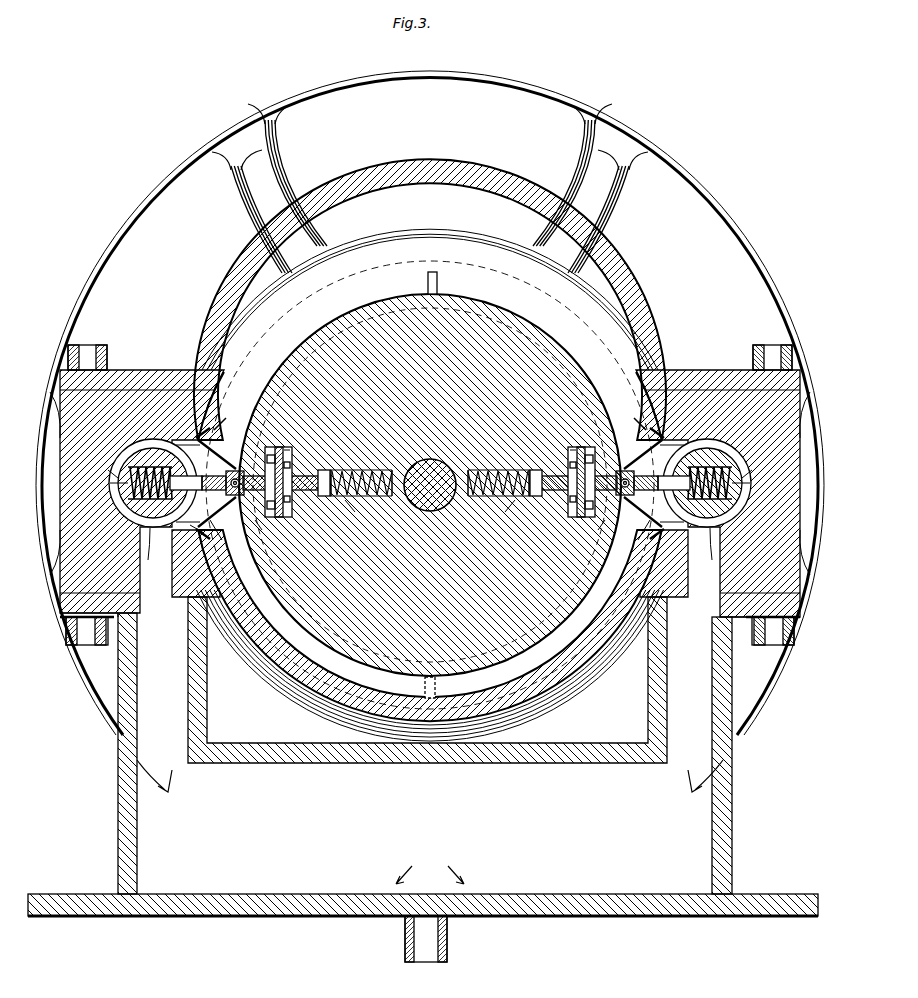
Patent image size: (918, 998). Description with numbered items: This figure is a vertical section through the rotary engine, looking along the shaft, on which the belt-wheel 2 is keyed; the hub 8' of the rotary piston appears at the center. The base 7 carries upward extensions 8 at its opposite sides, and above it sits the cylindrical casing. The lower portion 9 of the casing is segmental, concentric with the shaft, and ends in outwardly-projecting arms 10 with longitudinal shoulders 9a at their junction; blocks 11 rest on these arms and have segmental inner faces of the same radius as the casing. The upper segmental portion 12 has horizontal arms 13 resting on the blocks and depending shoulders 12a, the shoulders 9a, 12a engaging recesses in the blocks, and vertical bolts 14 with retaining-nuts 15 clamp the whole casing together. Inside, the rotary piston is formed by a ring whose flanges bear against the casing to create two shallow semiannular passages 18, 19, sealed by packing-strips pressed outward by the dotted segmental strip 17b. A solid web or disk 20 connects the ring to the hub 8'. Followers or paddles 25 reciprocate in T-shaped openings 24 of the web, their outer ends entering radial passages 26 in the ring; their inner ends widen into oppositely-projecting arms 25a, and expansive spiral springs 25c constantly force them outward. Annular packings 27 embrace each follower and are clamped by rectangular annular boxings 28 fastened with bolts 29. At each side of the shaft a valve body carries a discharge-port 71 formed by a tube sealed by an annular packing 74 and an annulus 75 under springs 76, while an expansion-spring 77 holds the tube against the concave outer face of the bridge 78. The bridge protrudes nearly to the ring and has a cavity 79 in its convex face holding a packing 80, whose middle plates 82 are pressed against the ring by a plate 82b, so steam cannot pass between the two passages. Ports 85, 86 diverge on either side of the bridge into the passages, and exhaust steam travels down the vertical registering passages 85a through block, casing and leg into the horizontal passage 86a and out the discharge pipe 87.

The belt-wheel 2 is at (437, 79).
The base 7 is at (423, 877).
The upward extensions 8 is at (421, 753).
The hub 8' is at (458, 360).
The lower portion of the engine-casing 9 is at (328, 692).
The longitudinal shoulders 9a is at (222, 600).
The outwardly-projecting arms 10 is at (72, 588).
The blocks 11 is at (75, 548).
The segmental portion of the upper casing 12 is at (430, 248).
The depending shoulders 12a is at (232, 398).
The outwardly-projecting horizontal arms 13 is at (166, 370).
The vertical bolts 14 is at (88, 345).
The retaining-nuts 15 is at (80, 632).
The segmental strip 17b is at (603, 320).
The semiannular passage 18 is at (413, 283).
The semiannular passage 19 is at (417, 687).
The web or spoke 20 is at (430, 485).
The T-shaped openings 24 is at (334, 470).
The followers or paddles 25 is at (290, 510).
The oppositely-projecting arms 25a is at (432, 515).
The expansive spiral springs 25c is at (366, 470).
The radial passages 26 is at (429, 535).
The annular packings 27 is at (276, 448).
The rectangular annular boxings 28 is at (288, 450).
The bolts 29 is at (322, 472).
The discharge-port 71 is at (431, 542).
The annular packing 74 is at (190, 476).
The annulus 75 is at (170, 455).
The springs 76 is at (150, 444).
The expansion-spring 77 is at (118, 470).
The bridge 78 is at (196, 536).
The cavity 79 is at (242, 442).
The packing 80 is at (236, 497).
The plates 82 is at (426, 483).
The plate 82b is at (437, 414).
The port 85 is at (428, 535).
The vertical registering passages 85a is at (430, 698).
The port 86 is at (430, 493).
The horizontal passage 86a is at (430, 858).
The discharge or waste pipe 87 is at (426, 939).